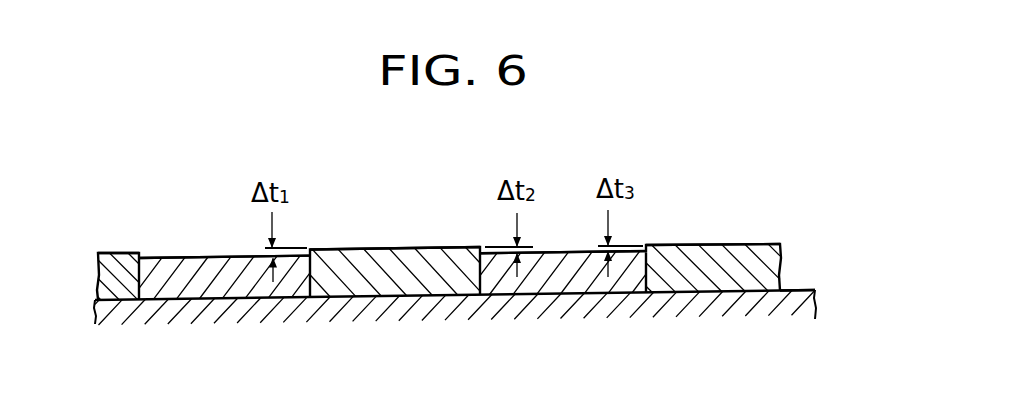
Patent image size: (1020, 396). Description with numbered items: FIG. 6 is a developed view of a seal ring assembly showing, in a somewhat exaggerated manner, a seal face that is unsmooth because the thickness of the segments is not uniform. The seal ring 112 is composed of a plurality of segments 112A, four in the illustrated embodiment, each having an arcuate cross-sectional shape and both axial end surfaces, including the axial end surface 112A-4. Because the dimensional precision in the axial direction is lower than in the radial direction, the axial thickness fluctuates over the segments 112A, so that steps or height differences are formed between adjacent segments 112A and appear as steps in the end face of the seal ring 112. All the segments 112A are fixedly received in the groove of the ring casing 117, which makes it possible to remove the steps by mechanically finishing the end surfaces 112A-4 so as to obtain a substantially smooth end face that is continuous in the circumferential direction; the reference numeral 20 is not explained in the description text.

The seal ring 112 is at (330, 248).
The segment 112A is at (213, 258).
The axial end surface 112A-4 is at (175, 258).
The ring casing 117 is at (677, 306).
The substrate surface 20 is at (796, 290).